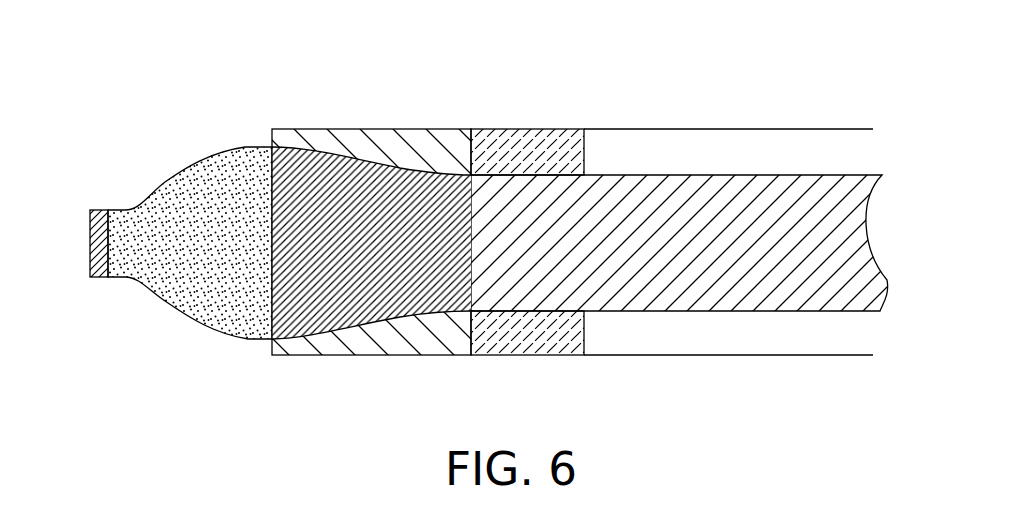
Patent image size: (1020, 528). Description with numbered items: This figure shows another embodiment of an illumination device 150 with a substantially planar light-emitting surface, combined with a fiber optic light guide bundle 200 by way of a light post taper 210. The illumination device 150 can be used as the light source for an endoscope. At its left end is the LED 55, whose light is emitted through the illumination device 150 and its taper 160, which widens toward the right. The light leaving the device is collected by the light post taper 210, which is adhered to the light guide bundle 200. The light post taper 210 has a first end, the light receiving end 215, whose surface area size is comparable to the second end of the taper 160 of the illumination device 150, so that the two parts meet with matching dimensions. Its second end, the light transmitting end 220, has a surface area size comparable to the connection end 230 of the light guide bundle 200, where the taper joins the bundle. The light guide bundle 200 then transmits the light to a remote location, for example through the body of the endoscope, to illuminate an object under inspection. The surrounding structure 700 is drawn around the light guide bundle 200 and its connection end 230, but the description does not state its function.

The LED 55 is at (88, 237).
The illumination device 150 is at (157, 262).
The taper 160 is at (179, 171).
The light guide bundle 200 is at (832, 251).
The light post taper 210 is at (361, 158).
The light receiving end 215 is at (270, 148).
The light transmitting end 220 is at (467, 313).
The connection end 230 is at (480, 215).
The outer tube / housing 700 is at (667, 125).